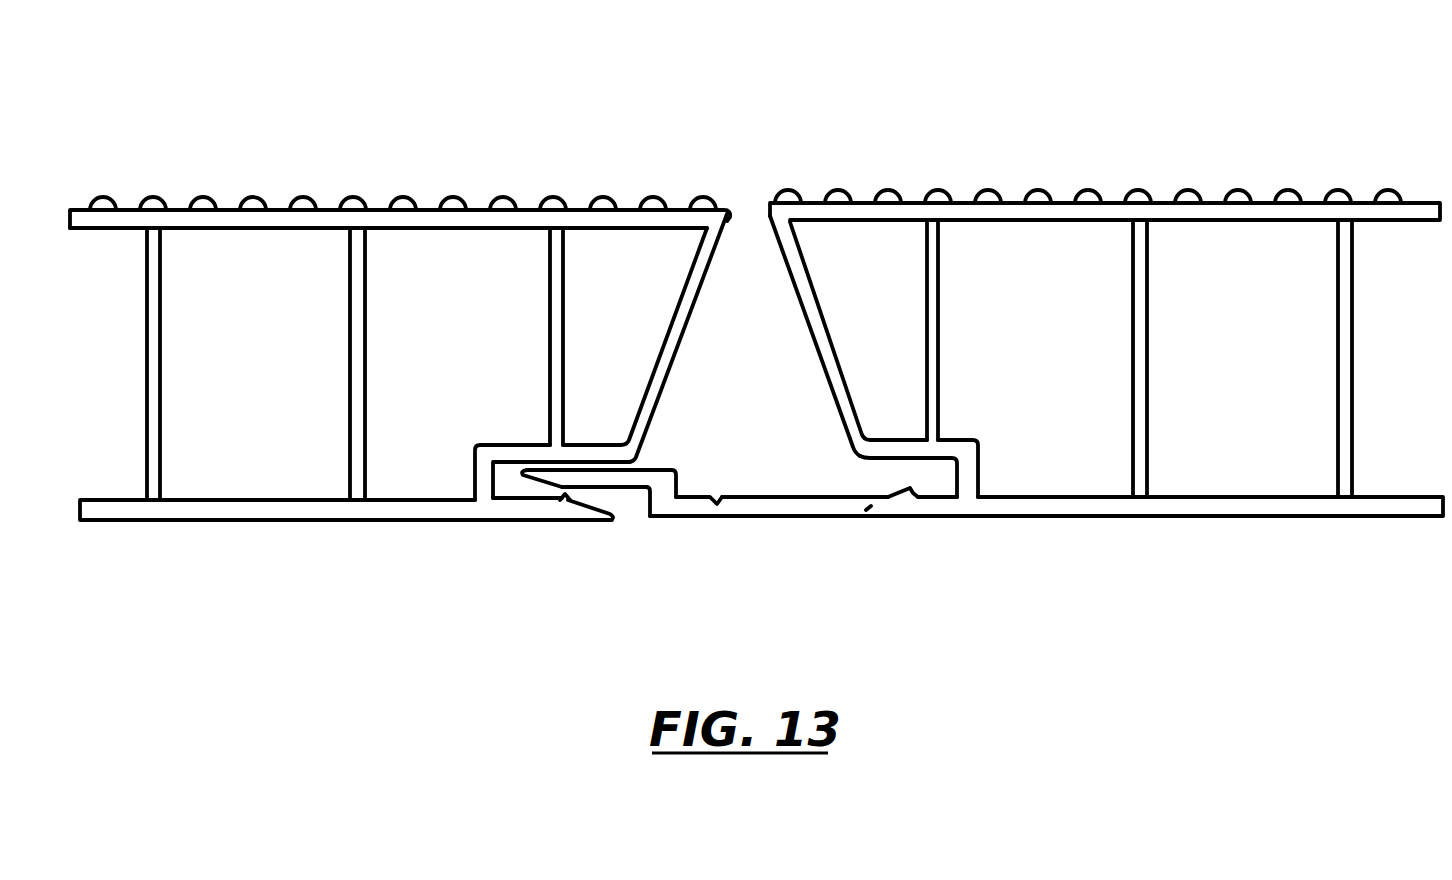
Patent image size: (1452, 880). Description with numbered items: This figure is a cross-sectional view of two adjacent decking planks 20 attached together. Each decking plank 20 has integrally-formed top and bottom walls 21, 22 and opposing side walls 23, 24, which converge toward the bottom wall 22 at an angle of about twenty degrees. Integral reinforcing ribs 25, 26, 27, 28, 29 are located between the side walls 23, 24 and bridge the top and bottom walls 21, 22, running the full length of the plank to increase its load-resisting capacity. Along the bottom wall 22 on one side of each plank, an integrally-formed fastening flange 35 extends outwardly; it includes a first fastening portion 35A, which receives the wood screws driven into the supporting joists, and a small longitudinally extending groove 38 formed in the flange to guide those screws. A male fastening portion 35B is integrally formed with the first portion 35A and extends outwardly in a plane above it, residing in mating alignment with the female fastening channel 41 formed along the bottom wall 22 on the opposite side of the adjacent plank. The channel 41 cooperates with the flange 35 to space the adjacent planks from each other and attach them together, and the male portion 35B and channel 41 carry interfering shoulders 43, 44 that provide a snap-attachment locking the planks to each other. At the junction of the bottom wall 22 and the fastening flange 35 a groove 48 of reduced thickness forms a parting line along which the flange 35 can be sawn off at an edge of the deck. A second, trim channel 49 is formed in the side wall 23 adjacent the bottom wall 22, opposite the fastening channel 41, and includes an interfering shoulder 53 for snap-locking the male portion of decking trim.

The decking plank 20 is at (400, 148).
The top wall 21 is at (293, 237).
The bottom wall 22 is at (218, 510).
The side wall 23 is at (803, 303).
The side wall 24 is at (692, 310).
The reinforcing rib 25 is at (935, 270).
The reinforcing rib 26 is at (1138, 262).
The reinforcing rib 27 is at (145, 403).
The reinforcing rib 28 is at (352, 402).
The reinforcing rib 29 is at (555, 293).
The fastening flange 35 is at (688, 463).
The first fastening portion 35A is at (692, 503).
The male fastening portion 35B is at (633, 478).
The groove 38 is at (758, 500).
The female fastening channel 41 is at (497, 478).
The interfering shoulder 43 is at (556, 495).
The interfering shoulder 44 is at (565, 500).
The groove 48 is at (866, 510).
The trim channel 49 is at (957, 477).
The interfering shoulder 53 is at (915, 492).